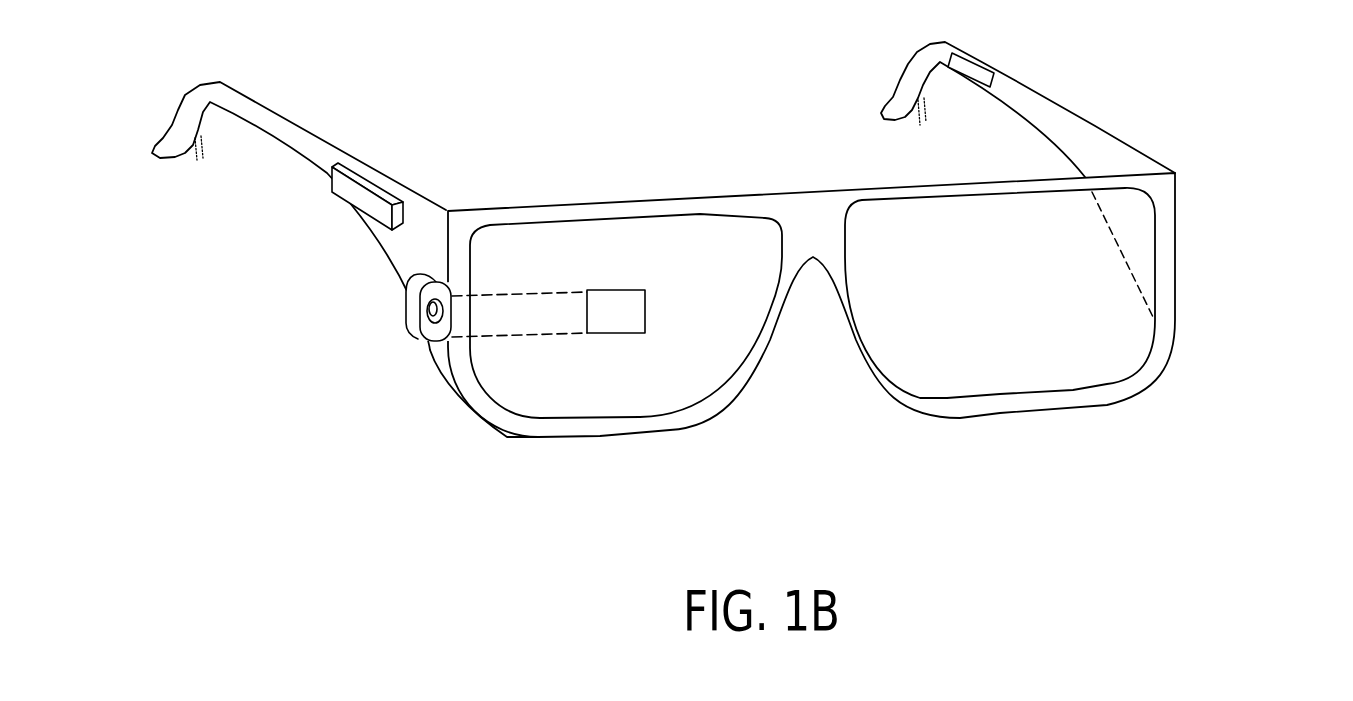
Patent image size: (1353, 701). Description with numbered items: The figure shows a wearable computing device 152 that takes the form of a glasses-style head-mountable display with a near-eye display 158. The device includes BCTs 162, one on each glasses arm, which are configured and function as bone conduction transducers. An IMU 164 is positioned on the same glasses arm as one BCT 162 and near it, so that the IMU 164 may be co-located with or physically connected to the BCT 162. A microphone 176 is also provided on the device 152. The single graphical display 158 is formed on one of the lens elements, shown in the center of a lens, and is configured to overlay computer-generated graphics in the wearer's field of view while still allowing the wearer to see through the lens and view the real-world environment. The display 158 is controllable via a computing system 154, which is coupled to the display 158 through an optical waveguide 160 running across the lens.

The wearable computing device 152 is at (1250, 266).
The computing system 154 is at (353, 194).
The near-eye display 158 is at (610, 335).
The optical waveguide 160 is at (505, 338).
The BCT 162 is at (221, 150).
The IMU 164 is at (977, 63).
The microphone 176 is at (407, 312).